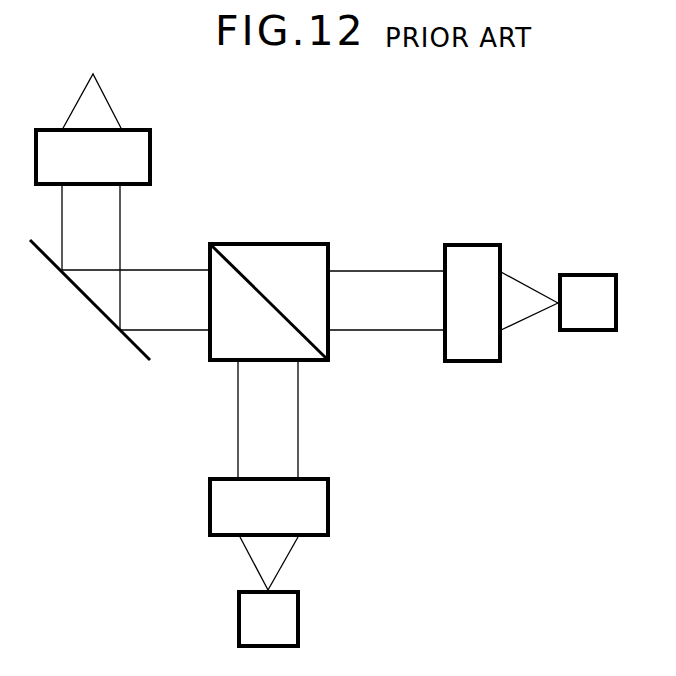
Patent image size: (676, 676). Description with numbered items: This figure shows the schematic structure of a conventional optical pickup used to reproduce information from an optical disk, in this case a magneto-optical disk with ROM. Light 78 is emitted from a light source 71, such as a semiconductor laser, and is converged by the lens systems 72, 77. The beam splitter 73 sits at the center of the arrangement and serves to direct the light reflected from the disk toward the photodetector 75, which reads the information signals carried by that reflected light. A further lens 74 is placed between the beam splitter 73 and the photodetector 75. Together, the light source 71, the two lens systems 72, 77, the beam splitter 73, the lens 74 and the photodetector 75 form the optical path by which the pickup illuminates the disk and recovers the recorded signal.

The light source 71 is at (598, 322).
The lens system 72 is at (473, 257).
The beam splitter 73 is at (298, 258).
The lens 74 is at (320, 510).
The photodetector 75 is at (288, 623).
The lens system 77 is at (135, 160).
The light 78 is at (517, 297).